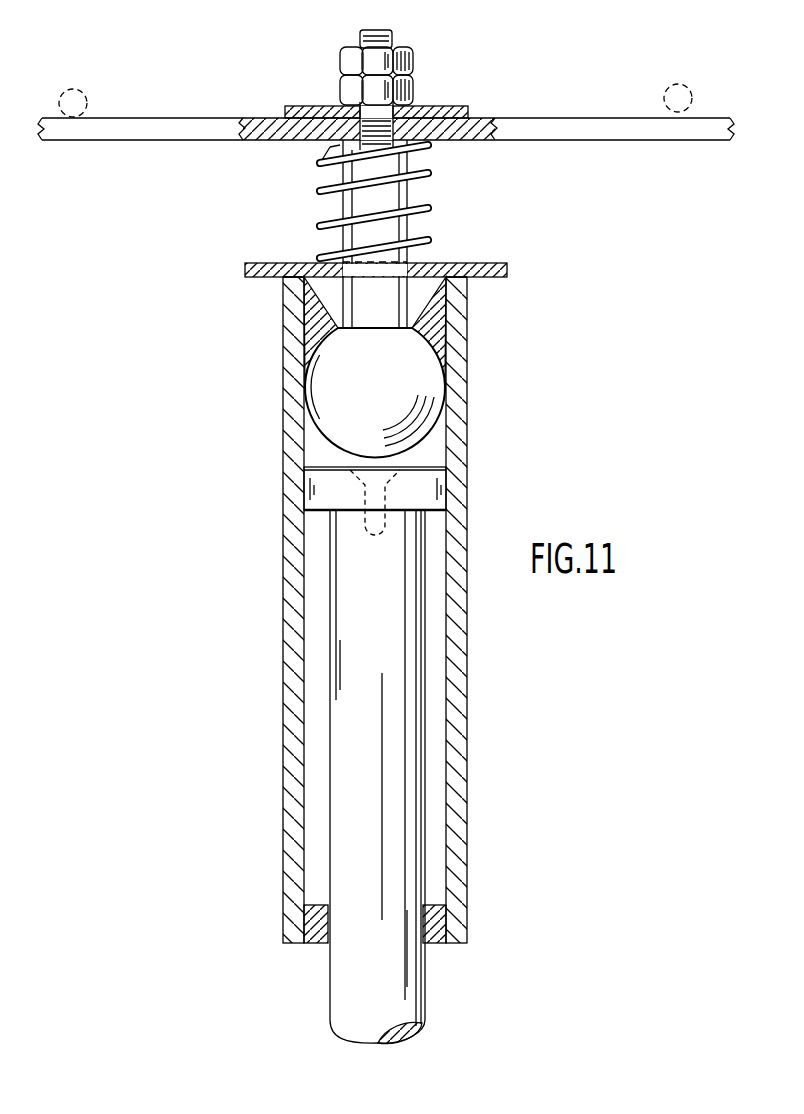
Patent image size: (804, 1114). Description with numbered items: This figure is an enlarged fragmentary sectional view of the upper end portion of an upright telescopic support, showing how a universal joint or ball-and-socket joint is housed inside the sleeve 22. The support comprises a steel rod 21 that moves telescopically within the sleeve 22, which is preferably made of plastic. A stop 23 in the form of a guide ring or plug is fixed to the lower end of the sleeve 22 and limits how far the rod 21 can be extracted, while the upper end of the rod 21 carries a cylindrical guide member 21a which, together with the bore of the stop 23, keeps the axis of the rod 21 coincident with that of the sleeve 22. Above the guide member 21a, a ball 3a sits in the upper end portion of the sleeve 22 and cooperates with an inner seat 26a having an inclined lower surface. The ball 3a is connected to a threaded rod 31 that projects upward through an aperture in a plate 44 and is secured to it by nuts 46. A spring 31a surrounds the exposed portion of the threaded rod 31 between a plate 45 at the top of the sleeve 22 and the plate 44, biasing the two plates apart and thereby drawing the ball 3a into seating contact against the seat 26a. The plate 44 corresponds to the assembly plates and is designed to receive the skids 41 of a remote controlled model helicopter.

The ball 3a is at (340, 405).
The steel rod 21 is at (362, 603).
The cylindrical guide member 21a is at (333, 495).
The sleeve 22 is at (453, 615).
The stop 23 is at (437, 920).
The inner seat 26a is at (312, 328).
The threaded rod 31 is at (355, 205).
The spring 31a is at (322, 158).
The skids 41 is at (82, 103).
The plate 44 is at (547, 128).
The plate 45 is at (478, 262).
The nuts 46 is at (343, 88).